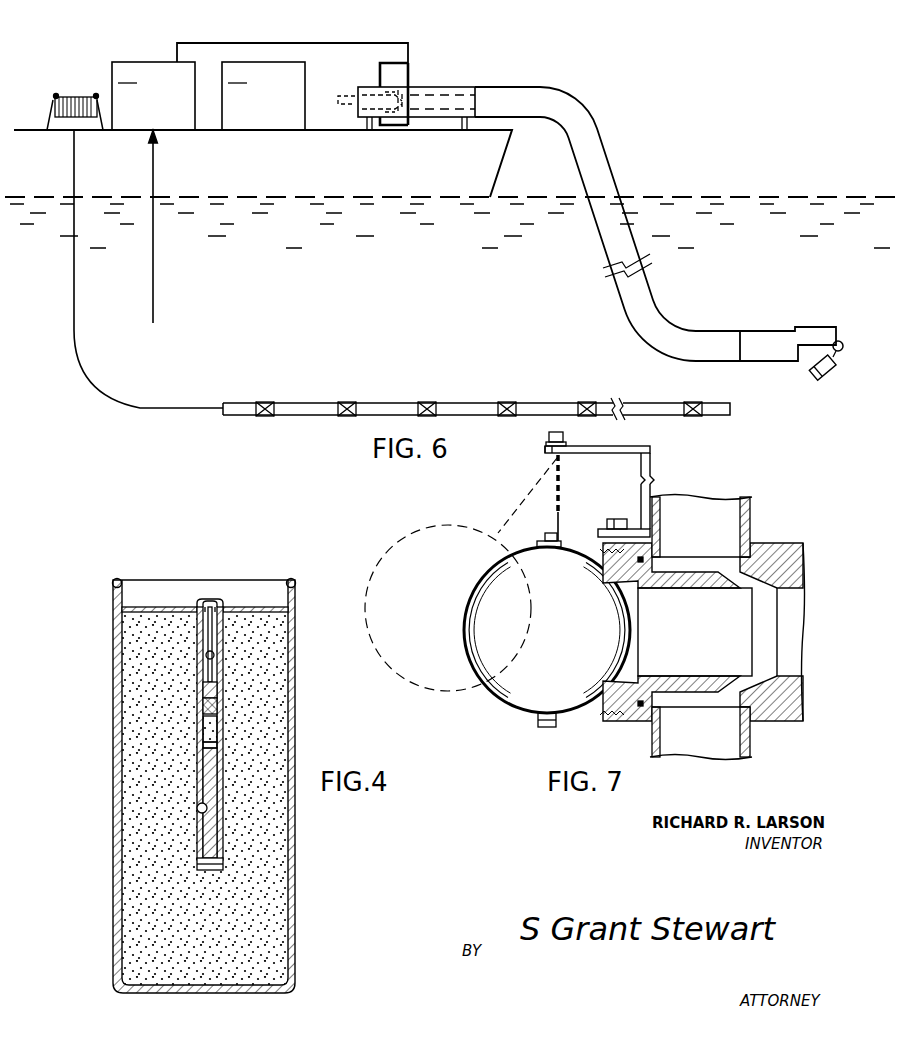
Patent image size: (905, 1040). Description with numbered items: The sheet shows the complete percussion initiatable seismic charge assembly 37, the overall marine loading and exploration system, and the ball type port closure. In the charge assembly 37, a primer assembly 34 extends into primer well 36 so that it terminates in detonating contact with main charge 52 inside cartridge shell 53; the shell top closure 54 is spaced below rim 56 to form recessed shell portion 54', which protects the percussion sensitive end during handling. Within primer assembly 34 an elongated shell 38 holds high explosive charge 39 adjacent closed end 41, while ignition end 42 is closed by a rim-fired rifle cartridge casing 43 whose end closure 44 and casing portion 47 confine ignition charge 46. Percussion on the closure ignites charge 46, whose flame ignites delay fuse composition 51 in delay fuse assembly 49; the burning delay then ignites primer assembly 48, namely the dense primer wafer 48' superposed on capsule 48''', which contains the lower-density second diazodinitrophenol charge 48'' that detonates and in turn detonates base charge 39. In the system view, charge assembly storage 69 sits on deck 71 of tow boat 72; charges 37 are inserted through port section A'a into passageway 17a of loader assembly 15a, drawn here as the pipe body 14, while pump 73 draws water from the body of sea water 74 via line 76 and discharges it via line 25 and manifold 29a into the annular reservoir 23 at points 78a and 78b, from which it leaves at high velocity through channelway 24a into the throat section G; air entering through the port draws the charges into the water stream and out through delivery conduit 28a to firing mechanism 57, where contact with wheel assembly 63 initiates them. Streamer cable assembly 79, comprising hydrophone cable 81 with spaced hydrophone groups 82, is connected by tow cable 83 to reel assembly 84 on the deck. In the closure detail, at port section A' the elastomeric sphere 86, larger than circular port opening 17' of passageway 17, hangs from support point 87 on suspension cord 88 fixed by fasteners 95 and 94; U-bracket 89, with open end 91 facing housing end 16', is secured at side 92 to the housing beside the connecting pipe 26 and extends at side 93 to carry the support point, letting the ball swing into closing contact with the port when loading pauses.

In FIG. 6, the reel assembly 84 is at (82, 96).
In FIG. 6, the pump 73 is at (153, 96).
In FIG. 6, the charge assembly storage 69 is at (263, 96).
In FIG. 6, the line 25 is at (252, 43).
In FIG. 6, the manifold 29a is at (409, 72).
In FIG. 6, the discharge point 78a is at (379, 82).
In FIG. 6, the annular reservoir 23 is at (386, 94).
In FIG. 6, the loader assembly 15a is at (428, 82).
In FIG. 6, the pipe body 14 is at (460, 82).
In FIG. 6, the delivery conduit 28a is at (549, 113).
In FIG. 6, the port section A'a is at (333, 73).
In FIG. 6, the seismic charge assembly 37 is at (340, 95).
In FIG. 4, the seismic charge assembly 37 is at (104, 790).
In FIG. 6, the deck 71 is at (333, 130).
In FIG. 6, the passageway 17a is at (370, 117).
In FIG. 6, the discharge point 78b is at (385, 126).
In FIG. 6, the channelway 24a is at (411, 148).
In FIG. 6, the tow boat 72 is at (232, 174).
In FIG. 6, the tow cable 83 is at (74, 281).
In FIG. 6, the line 76 is at (153, 281).
In FIG. 6, the body of sea water 74 is at (495, 277).
In FIG. 6, the firing mechanism 57 is at (768, 327).
In FIG. 6, the wheel assembly 63 is at (840, 340).
In FIG. 6, the streamer cable assembly 79 is at (386, 392).
In FIG. 6, the hydrophone cable 81 is at (300, 403).
In FIG. 6, the hydrophone groups 82 is at (264, 402).
In FIG. 7, the nut type fastener 95 is at (549, 438).
In FIG. 7, the bracket side 93 is at (583, 452).
In FIG. 7, the support point 87 is at (545, 451).
In FIG. 7, the U-bracket 89 is at (652, 466).
In FIG. 7, the open end 91 is at (621, 480).
In FIG. 7, the suspension cord 88 is at (560, 505).
In FIG. 7, the nut type fastener 94 is at (543, 538).
In FIG. 7, the bracket side 92 is at (598, 535).
In FIG. 7, the pipe 26 is at (750, 520).
In FIG. 7, the elastomeric sphere 86 is at (576, 639).
In FIG. 7, the throat section G is at (697, 639).
In FIG. 7, the passageway 17 is at (788, 632).
In FIG. 7, the port opening 17' is at (590, 715).
In FIG. 7, the housing end 16' is at (666, 715).
In FIG. 7, the port section A' is at (670, 645).
In FIG. 4, the rim 56 is at (117, 578).
In FIG. 4, the ignition charge 46 is at (203, 602).
In FIG. 4, the casing portion 47 is at (210, 602).
In FIG. 4, the end closure 44 is at (219, 603).
In FIG. 4, the shell top closure 54 is at (185, 608).
In FIG. 4, the recessed shell portion 54' is at (163, 589).
In FIG. 4, the ignition end 42 is at (214, 632).
In FIG. 4, the rifle cartridge casing 43 is at (214, 652).
In FIG. 4, the delay fuse composition 51 is at (203, 688).
In FIG. 4, the delay fuse assembly 49 is at (186, 695).
In FIG. 4, the primer wafer 48' is at (269, 704).
In FIG. 4, the primer assembly 48 is at (277, 725).
In FIG. 4, the second diazodinitrophenol charge 48'' is at (147, 729).
In FIG. 4, the capsule 48''' is at (146, 754).
In FIG. 4, the shell 38 is at (198, 810).
In FIG. 4, the primer assembly 34 is at (232, 826).
In FIG. 4, the high explosive charge 39 is at (205, 843).
In FIG. 4, the closed end 41 is at (200, 866).
In FIG. 4, the primer well 36 is at (215, 870).
In FIG. 4, the main charge 52 is at (206, 930).
In FIG. 4, the cartridge shell 53 is at (296, 927).